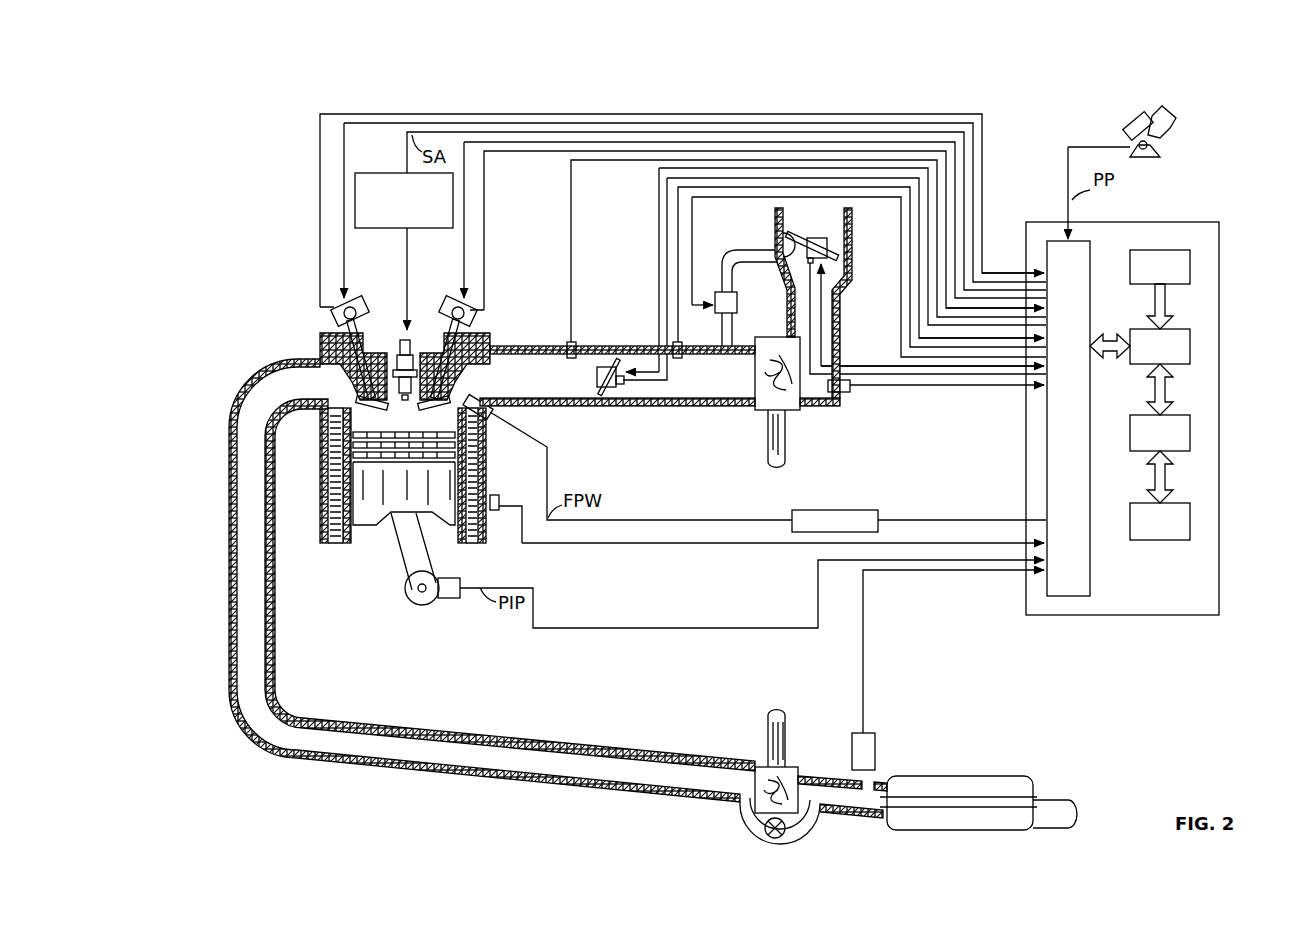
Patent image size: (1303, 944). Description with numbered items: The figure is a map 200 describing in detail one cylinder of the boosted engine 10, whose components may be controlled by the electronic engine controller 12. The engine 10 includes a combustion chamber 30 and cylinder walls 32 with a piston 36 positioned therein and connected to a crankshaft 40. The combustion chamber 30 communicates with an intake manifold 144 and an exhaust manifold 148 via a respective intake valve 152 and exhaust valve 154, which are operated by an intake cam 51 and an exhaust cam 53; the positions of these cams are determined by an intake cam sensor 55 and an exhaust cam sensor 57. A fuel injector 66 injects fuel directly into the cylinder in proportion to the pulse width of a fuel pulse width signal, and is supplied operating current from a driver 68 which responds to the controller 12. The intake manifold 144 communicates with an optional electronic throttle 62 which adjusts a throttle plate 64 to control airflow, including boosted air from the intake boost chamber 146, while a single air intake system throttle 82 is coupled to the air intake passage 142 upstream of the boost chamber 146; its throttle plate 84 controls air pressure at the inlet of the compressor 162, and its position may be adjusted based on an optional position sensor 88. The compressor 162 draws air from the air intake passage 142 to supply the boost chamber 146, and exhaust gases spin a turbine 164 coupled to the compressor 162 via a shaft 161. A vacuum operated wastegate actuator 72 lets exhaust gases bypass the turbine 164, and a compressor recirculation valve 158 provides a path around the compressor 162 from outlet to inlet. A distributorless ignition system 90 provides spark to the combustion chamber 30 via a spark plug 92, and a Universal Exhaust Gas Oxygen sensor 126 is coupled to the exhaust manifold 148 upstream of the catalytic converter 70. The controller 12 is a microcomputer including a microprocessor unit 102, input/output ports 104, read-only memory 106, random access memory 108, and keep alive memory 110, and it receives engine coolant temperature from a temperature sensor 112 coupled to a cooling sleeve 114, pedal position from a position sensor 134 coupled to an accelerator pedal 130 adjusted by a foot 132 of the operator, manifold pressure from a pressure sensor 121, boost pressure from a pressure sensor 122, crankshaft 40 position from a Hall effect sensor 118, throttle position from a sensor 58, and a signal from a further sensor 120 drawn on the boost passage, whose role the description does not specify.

The map 200 is at (195, 143).
The engine 10 is at (262, 293).
The electronic engine controller 12 is at (1155, 405).
The combustion chamber 30 is at (352, 485).
The cylinder walls 32 is at (352, 545).
The piston 36 is at (393, 500).
The crankshaft 40 is at (412, 605).
The intake cam 51 is at (452, 300).
The exhaust cam 53 is at (348, 300).
The intake cam sensor 55 is at (470, 312).
The exhaust cam sensor 57 is at (335, 313).
The throttle position sensor 58 is at (625, 384).
The electronic throttle 62 is at (602, 366).
The throttle plate 64 is at (612, 360).
The fuel injector 66 is at (499, 430).
The driver 68 is at (880, 526).
The catalytic converter 70 is at (893, 824).
The wastegate actuator 72 is at (762, 832).
The air intake system throttle 82 is at (790, 246).
The throttle plate 84 is at (782, 230).
The position sensor 88 is at (806, 250).
The distributorless ignition system 90 is at (365, 173).
The spark plug 92 is at (410, 338).
The microprocessor unit 102 is at (1190, 347).
The input/output ports 104 is at (1090, 250).
The read-only memory 106 is at (1190, 265).
The random access memory 108 is at (1190, 432).
The keep alive memory 110 is at (1190, 520).
The temperature sensor 112 is at (496, 496).
The cooling sleeve 114 is at (470, 533).
The Hall effect sensor 118 is at (448, 599).
The manifold pressure sensor 120 is at (848, 392).
The pressure sensor 121 is at (568, 343).
The pressure sensor 122 is at (680, 343).
The Universal Exhaust Gas Oxygen sensor 126 is at (876, 735).
The accelerator pedal 130 is at (1128, 128).
The foot 132 is at (1175, 118).
The position sensor 134 is at (1165, 150).
The air intake passage 142 is at (813, 303).
The intake manifold 144 is at (622, 367).
The intake boost chamber 146 is at (660, 387).
The exhaust manifold 148 is at (492, 580).
The intake valve 152 is at (432, 396).
The exhaust valve 154 is at (338, 388).
The compressor recirculation valve 158 is at (722, 300).
The shaft 161 is at (767, 437).
The compressor 162 is at (790, 415).
The turbine 164 is at (756, 775).